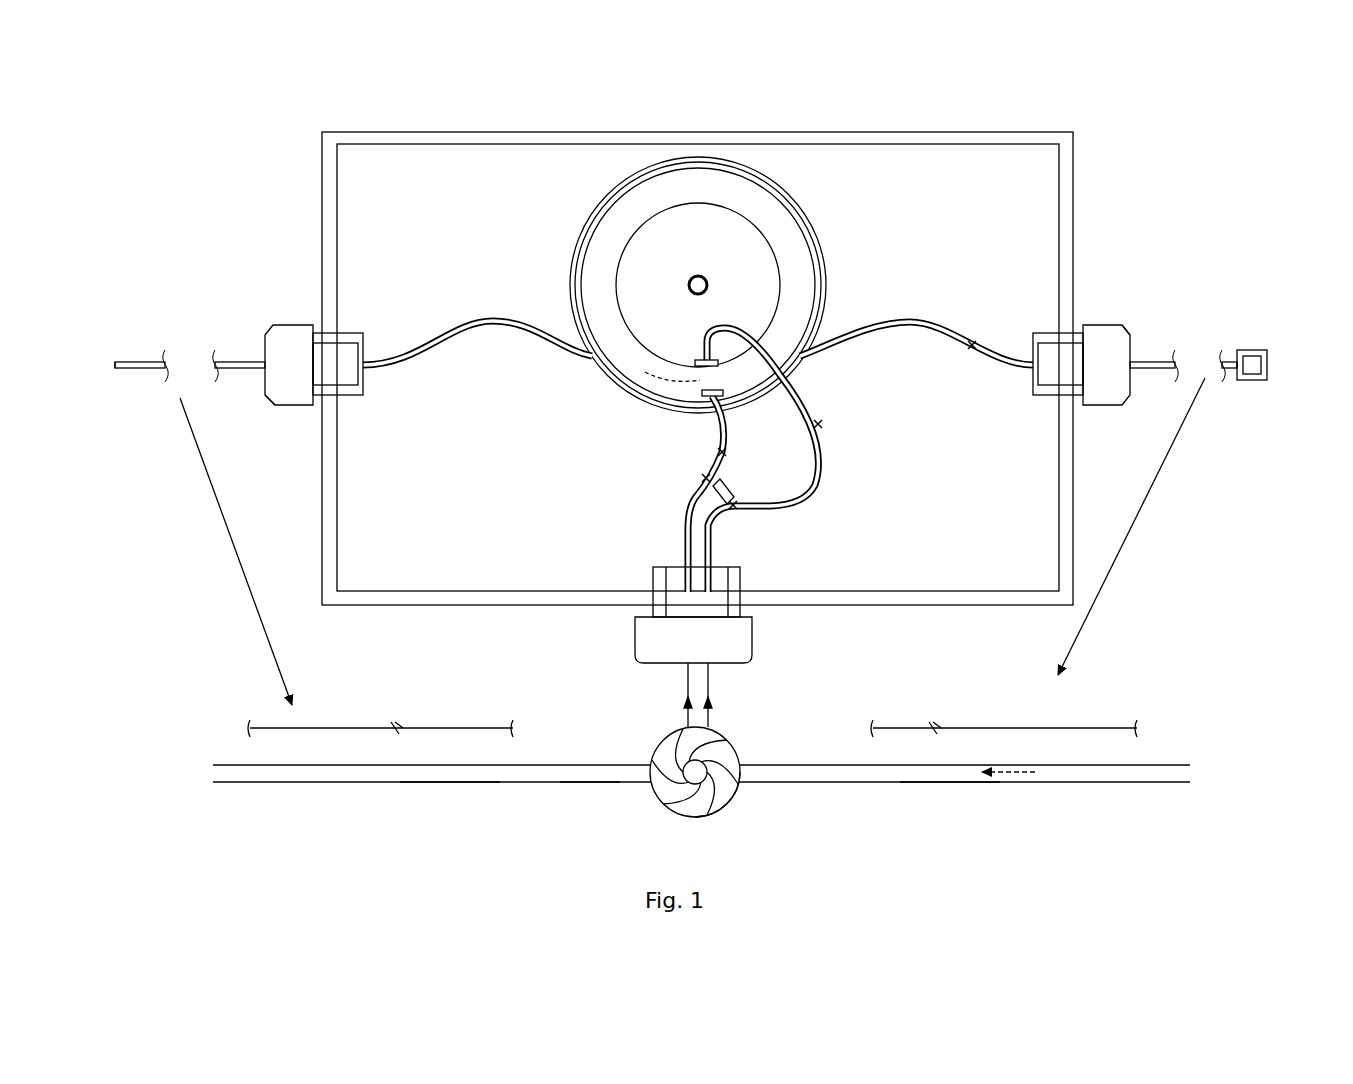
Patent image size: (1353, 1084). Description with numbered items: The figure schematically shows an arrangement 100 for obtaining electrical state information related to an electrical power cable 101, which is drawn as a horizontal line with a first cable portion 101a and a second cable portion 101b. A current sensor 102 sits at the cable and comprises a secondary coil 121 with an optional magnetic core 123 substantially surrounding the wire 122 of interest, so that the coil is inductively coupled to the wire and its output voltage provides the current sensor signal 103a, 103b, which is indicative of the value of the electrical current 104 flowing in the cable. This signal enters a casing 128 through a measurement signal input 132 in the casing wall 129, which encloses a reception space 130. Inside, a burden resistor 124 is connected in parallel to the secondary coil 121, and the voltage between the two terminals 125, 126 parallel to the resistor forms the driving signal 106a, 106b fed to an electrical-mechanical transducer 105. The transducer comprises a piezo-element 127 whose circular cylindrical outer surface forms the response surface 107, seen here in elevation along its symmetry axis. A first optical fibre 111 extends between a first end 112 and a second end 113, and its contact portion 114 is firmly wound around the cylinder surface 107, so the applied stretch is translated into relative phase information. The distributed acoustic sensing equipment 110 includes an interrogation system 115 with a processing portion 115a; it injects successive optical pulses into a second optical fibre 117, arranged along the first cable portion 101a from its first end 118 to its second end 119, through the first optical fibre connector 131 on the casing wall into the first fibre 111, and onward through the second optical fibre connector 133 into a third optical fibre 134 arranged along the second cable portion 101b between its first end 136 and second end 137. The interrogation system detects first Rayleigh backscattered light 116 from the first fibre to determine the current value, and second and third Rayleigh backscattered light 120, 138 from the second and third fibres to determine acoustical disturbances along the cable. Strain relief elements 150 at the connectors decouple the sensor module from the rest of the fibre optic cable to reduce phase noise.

The arrangement 100 is at (1143, 143).
The electrical power cable 101 is at (1161, 801).
The first cable portion 101a is at (913, 810).
The second cable portion 101b is at (432, 828).
The current sensor 102 is at (584, 697).
The current sensor signal 103a is at (688, 704).
The current sensor signal 103b is at (708, 704).
The electrical current 104 is at (1005, 785).
The electrical-mechanical transducer 105 is at (540, 252).
The driving signal 106a is at (720, 452).
The driving signal 106b is at (818, 425).
The response surface 107 is at (812, 270).
The distributed acoustic sensing equipment 110 is at (1207, 264).
The first optical fibre 111 is at (483, 326).
The first end 112 is at (1040, 385).
The second end 113 is at (348, 333).
The contact portion 114 is at (802, 212).
The interrogation system 115 is at (1262, 350).
The processing portion 115a is at (1270, 380).
The first Rayleigh backscattered light 116 is at (972, 345).
The second optical fibre 117 is at (1152, 372).
The first end 118 is at (1243, 350).
The second end 119 is at (1134, 335).
The second Rayleigh backscattered light 120 is at (933, 728).
The secondary coil 121 is at (775, 802).
The wire 122 is at (580, 785).
The magnetic core 123 is at (730, 800).
The burden resistor 124 is at (728, 492).
The terminal 125 is at (706, 478).
The terminal 126 is at (735, 506).
The piezo-element 127 is at (700, 346).
The casing 128 is at (268, 125).
The casing wall 129 is at (415, 590).
The reception space 130 is at (1030, 207).
The first optical fibre connector 131 is at (1103, 304).
The measurement signal input 132 is at (774, 641).
The second optical fibre connector 133 is at (284, 298).
The third optical fibre 134 is at (138, 358).
The first end 136 is at (262, 396).
The second end 137 is at (120, 372).
The third Rayleigh backscattered light 138 is at (397, 728).
The strain relief element 150 is at (292, 408).